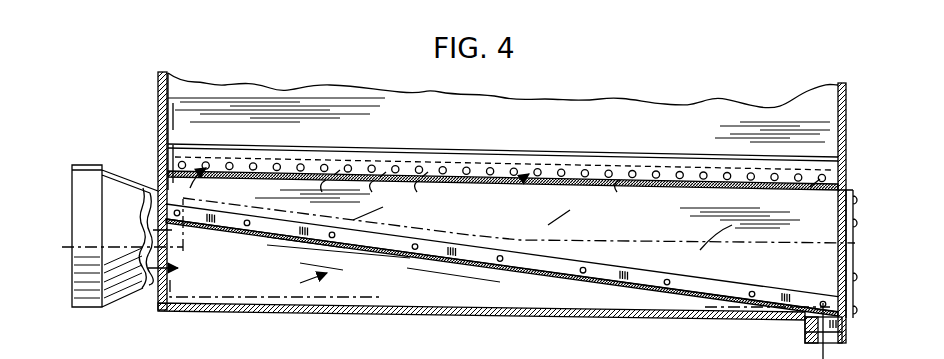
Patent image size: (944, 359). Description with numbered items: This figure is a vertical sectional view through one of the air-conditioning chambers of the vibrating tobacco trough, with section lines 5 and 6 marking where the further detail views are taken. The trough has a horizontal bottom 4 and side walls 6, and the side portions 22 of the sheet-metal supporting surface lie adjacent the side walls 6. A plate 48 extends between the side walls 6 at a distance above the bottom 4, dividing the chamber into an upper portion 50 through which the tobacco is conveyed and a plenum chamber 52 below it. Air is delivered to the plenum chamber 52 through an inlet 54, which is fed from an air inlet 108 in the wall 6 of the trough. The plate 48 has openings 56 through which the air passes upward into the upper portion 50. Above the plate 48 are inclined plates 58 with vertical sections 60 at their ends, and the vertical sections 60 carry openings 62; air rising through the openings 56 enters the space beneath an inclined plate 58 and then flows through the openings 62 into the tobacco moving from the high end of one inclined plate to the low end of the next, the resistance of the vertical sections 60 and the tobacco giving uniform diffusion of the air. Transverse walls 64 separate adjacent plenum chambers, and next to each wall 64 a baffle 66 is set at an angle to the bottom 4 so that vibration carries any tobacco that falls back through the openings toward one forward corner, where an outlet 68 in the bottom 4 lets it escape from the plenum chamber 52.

The bottom 4 is at (549, 318).
The section line 5- 5 is at (180, 118).
The side walls 6 is at (159, 140).
The side portions 22 is at (170, 80).
The plate 48 is at (517, 183).
The upper portion 50 is at (483, 121).
The plenum chamber 52 is at (478, 216).
The inlet 54 is at (172, 261).
The openings 56 is at (244, 181).
The inclined plates 58 is at (554, 167).
The vertical sections 60 is at (607, 170).
The openings 62 is at (374, 167).
The transverse walls 64 is at (674, 229).
The baffle 66 is at (402, 287).
The outlet 68 is at (812, 340).
The air inlets 108 is at (88, 190).